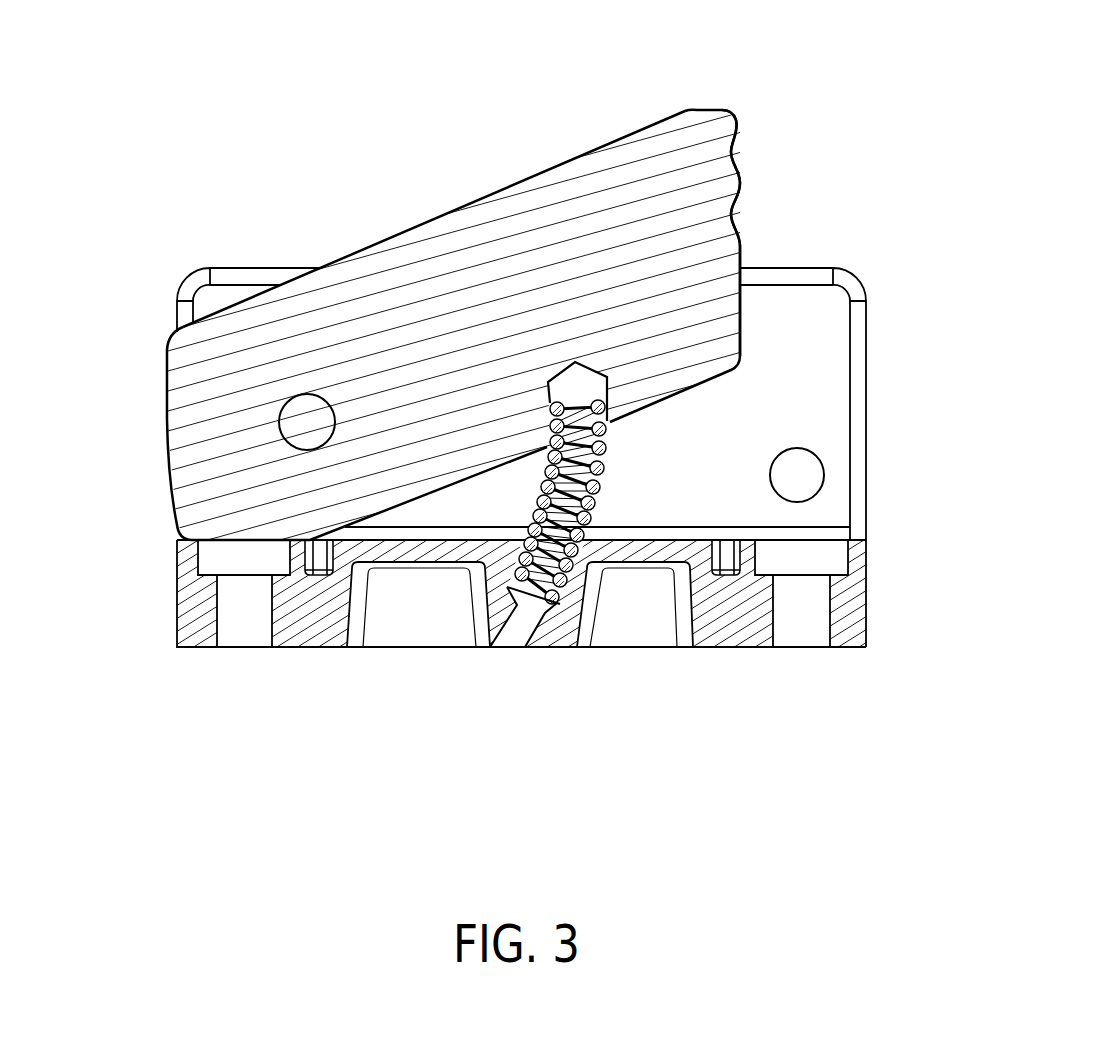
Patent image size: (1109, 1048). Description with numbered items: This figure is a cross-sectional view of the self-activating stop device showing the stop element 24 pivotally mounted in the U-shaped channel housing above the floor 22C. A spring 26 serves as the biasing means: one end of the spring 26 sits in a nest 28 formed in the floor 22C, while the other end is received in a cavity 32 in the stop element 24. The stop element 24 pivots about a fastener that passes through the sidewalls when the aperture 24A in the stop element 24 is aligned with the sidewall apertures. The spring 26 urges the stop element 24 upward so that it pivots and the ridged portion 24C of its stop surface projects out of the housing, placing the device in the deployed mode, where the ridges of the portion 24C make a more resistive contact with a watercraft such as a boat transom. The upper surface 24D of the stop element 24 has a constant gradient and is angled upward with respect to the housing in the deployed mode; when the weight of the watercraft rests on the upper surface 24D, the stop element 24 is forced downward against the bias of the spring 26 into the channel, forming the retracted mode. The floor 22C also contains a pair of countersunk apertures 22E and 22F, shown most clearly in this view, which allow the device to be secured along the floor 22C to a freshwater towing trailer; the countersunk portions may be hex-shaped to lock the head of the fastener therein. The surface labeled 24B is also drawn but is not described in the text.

The floor 22C is at (730, 647).
The countersunk aperture 22E is at (248, 613).
The countersunk aperture 22F is at (795, 613).
The stop element 24 is at (528, 316).
The aperture 24A is at (300, 428).
The rear edge of lever 24B is at (740, 320).
The ridged portion 24C is at (742, 108).
The upper surface 24D is at (553, 168).
The spring 26 is at (625, 449).
The nest 28 is at (543, 607).
The cavity 32 is at (596, 367).